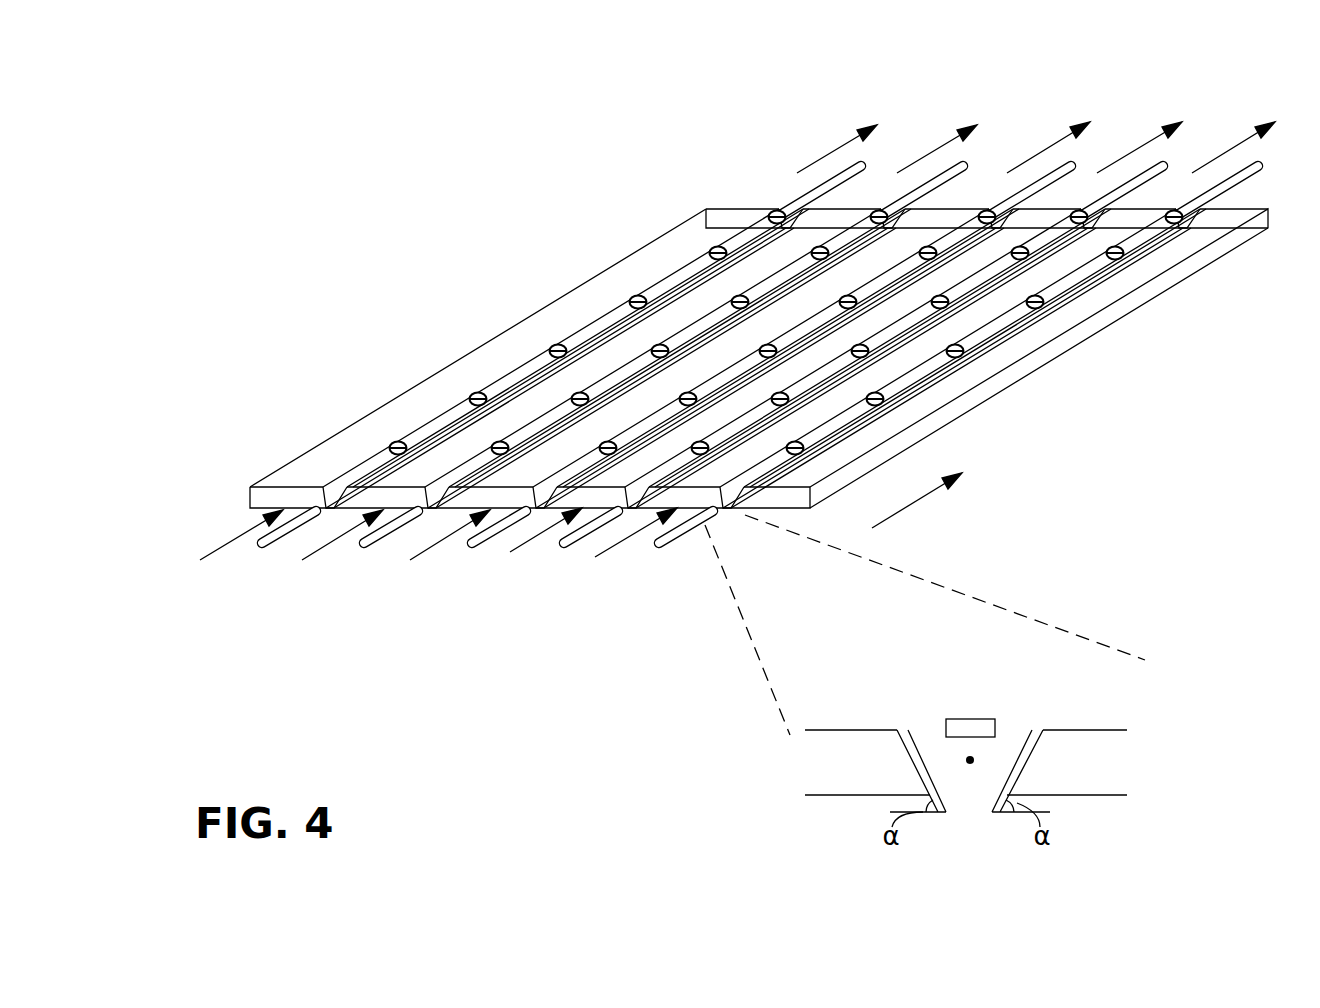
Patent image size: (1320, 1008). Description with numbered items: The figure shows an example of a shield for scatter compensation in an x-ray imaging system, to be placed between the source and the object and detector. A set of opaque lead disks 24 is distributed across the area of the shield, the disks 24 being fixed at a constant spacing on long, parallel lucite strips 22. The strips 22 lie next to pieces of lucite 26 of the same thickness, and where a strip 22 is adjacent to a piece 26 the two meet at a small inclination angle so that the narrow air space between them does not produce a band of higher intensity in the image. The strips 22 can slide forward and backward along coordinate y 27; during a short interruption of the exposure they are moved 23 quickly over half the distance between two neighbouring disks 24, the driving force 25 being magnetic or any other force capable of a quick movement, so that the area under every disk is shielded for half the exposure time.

The lucite strip 22 is at (1166, 219).
The movement of the strips 23 is at (832, 152).
The opaque lead disk 24 is at (626, 303).
The driving force 25 is at (258, 549).
The piece of lucite 26 is at (400, 497).
The coordinate y 27 is at (1030, 485).